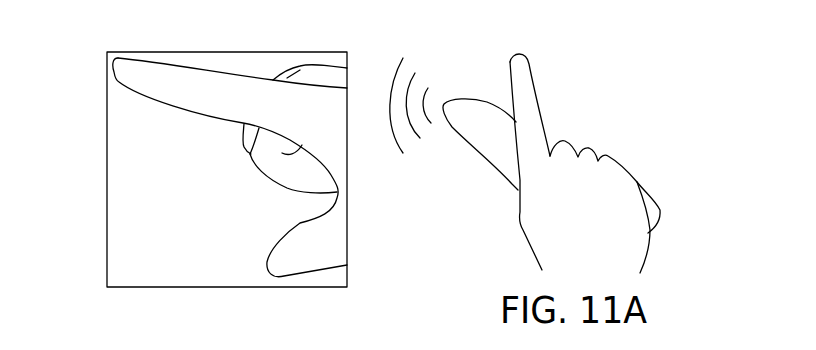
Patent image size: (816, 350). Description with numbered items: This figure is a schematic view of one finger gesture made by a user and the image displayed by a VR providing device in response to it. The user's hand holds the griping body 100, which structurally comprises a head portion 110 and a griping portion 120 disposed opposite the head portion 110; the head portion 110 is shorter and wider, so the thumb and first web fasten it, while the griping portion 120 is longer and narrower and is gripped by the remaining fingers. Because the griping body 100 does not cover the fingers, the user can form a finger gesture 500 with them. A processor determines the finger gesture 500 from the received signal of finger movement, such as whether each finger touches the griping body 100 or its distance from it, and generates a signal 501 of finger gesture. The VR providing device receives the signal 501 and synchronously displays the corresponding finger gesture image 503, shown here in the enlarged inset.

The griping body 100 is at (472, 104).
The head portion 110 is at (490, 145).
The griping portion 120 is at (657, 207).
The finger gesture 500 is at (592, 110).
The signal of finger gesture 501 is at (399, 60).
The finger gesture image 503 is at (107, 195).